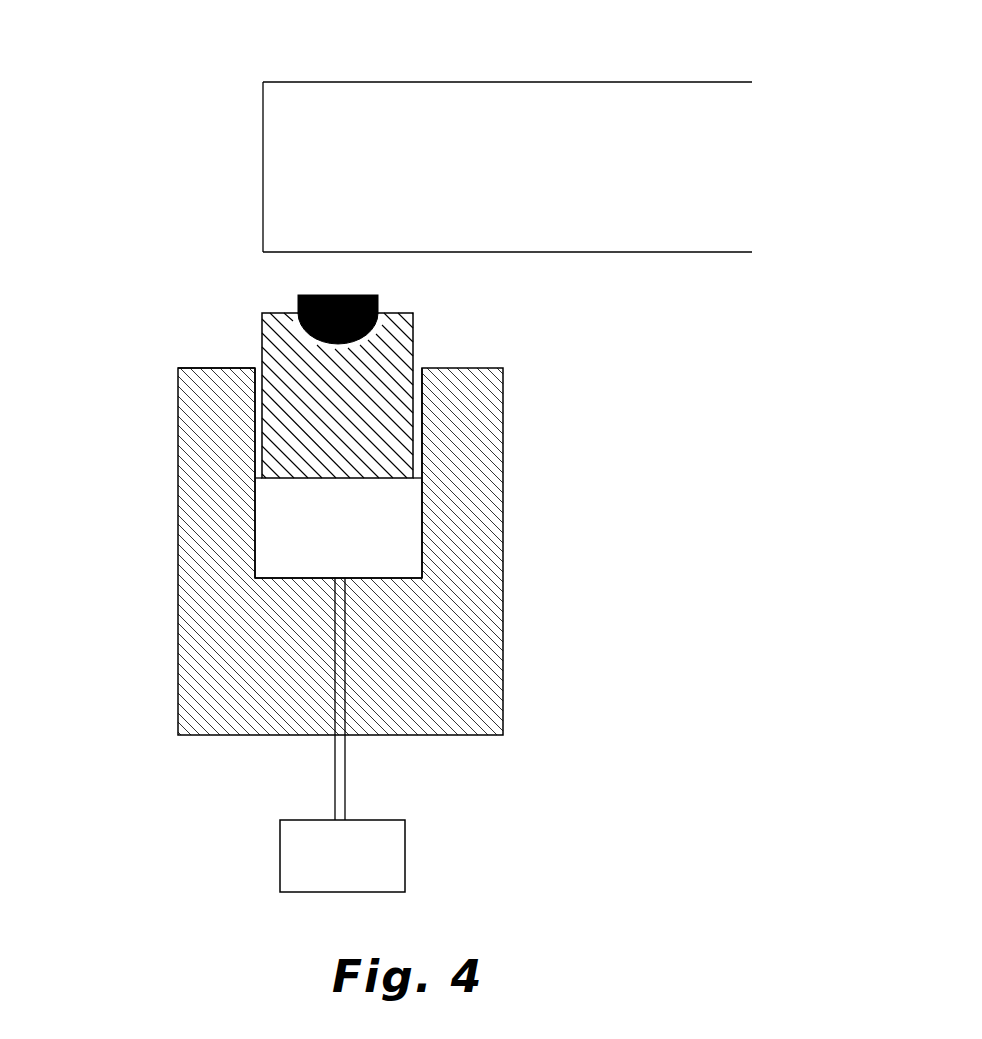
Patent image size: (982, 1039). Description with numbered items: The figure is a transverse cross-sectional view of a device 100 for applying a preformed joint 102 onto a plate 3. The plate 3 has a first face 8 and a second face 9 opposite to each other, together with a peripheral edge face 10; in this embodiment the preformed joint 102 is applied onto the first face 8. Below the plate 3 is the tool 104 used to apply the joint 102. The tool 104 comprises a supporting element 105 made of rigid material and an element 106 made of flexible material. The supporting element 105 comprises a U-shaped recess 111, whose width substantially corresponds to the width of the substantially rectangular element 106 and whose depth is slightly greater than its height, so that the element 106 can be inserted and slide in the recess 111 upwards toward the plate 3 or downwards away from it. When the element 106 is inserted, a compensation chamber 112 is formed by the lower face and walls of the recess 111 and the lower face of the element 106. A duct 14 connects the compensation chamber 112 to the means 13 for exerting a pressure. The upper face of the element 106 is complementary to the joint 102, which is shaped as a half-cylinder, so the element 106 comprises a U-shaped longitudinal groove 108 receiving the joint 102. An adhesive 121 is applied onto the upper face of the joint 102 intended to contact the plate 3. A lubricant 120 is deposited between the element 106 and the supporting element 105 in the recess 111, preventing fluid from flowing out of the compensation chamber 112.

The device 100 is at (143, 163).
The plate 3 is at (467, 152).
The second face 9 is at (540, 82).
The first face 8 is at (495, 254).
The peripheral edge face 10 is at (262, 170).
The tool 104 is at (510, 360).
The supporting element 105 is at (255, 656).
The element made of flexible material 106 is at (255, 392).
The lubricant 120 is at (255, 438).
The recess 111 is at (372, 495).
The compensation chamber 112 is at (372, 557).
The joint 102 is at (290, 310).
The longitudinal groove 108 is at (413, 324).
The adhesive 121 is at (328, 297).
The duct 14 is at (347, 760).
The means for exerting a pressure 13 is at (310, 855).